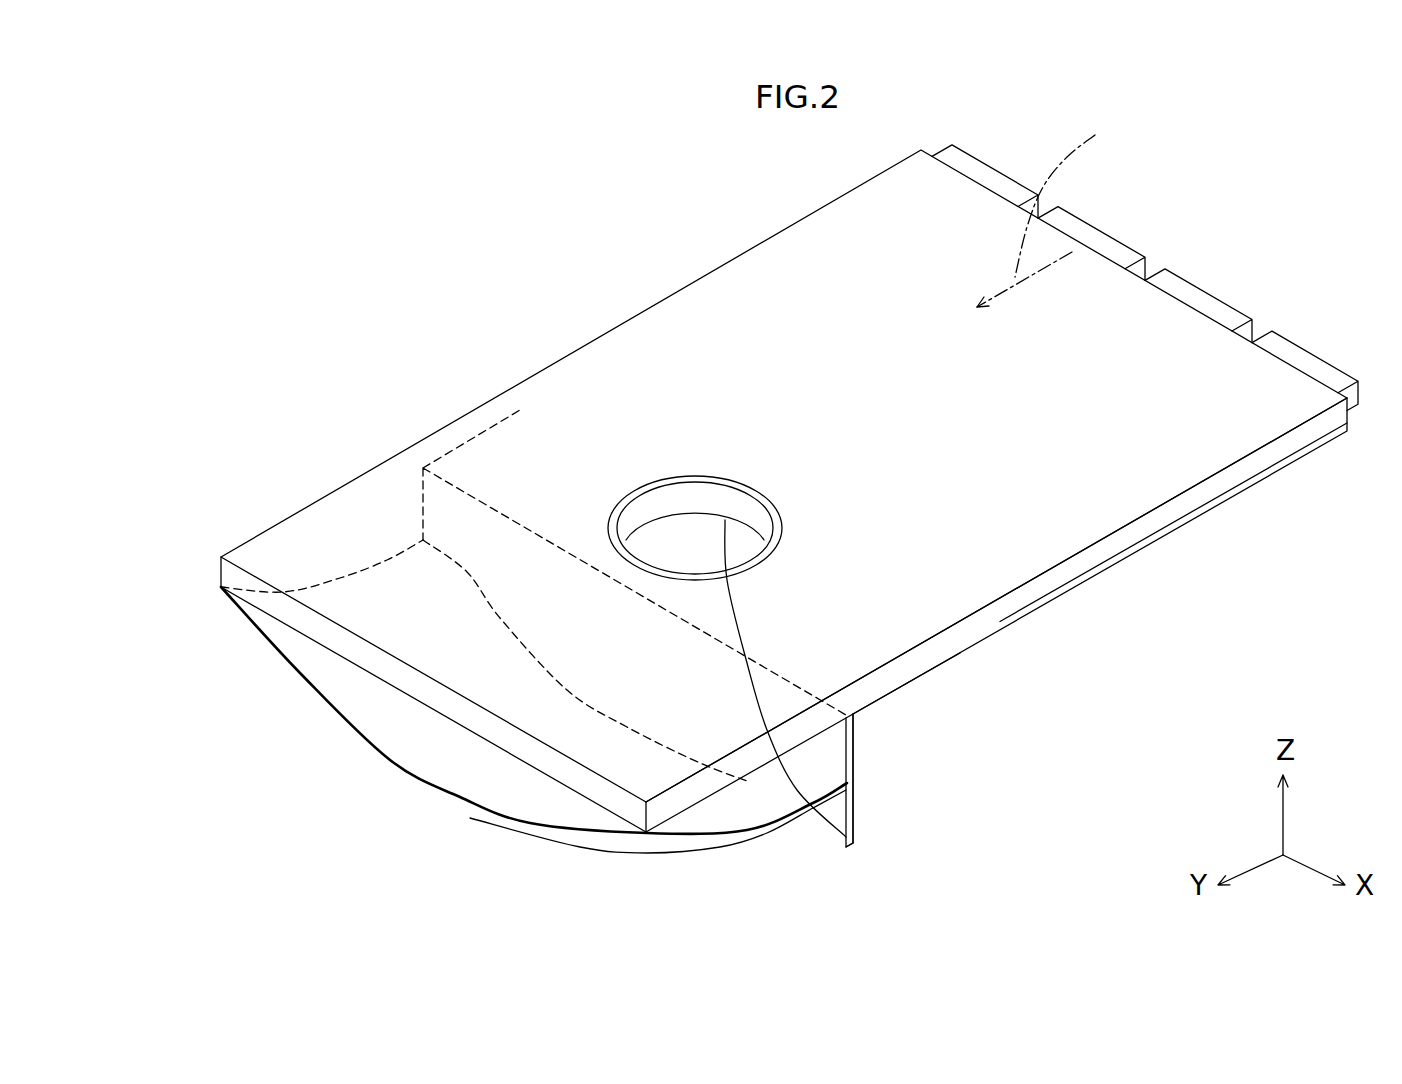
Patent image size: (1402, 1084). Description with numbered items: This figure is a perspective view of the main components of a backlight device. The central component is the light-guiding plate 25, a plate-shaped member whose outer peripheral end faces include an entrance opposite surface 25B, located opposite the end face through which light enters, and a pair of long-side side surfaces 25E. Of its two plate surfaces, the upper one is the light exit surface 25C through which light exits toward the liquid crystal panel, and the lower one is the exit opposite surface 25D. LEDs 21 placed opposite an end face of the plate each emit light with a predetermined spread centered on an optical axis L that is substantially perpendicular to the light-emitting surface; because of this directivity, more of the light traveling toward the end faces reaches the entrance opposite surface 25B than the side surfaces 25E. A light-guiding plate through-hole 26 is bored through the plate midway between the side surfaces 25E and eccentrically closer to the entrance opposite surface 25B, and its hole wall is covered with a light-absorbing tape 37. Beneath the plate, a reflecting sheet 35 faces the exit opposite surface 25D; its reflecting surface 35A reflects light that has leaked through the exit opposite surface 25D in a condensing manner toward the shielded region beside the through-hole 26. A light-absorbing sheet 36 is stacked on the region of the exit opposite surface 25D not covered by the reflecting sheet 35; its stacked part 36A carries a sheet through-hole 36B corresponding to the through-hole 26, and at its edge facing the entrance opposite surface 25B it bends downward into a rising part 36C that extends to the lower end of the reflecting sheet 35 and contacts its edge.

The LED 21 is at (1100, 230).
The light-guiding plate 25 is at (532, 262).
The entrance opposite surface 25B is at (292, 612).
The light exit surface 25C is at (547, 407).
The exit opposite surface 25D is at (1070, 587).
The side surfaces 25E is at (1147, 525).
The light-guiding plate through-hole 26 is at (673, 573).
The reflecting sheet 35 is at (388, 758).
The reflecting surface 35A is at (480, 777).
The light-absorbing sheet 36 is at (997, 697).
The stacked part 36A is at (893, 693).
The sheet through-hole 36B is at (852, 823).
The rising part 36C is at (852, 748).
The light-absorbing tape 37 is at (705, 497).
The optical axis L is at (1042, 219).